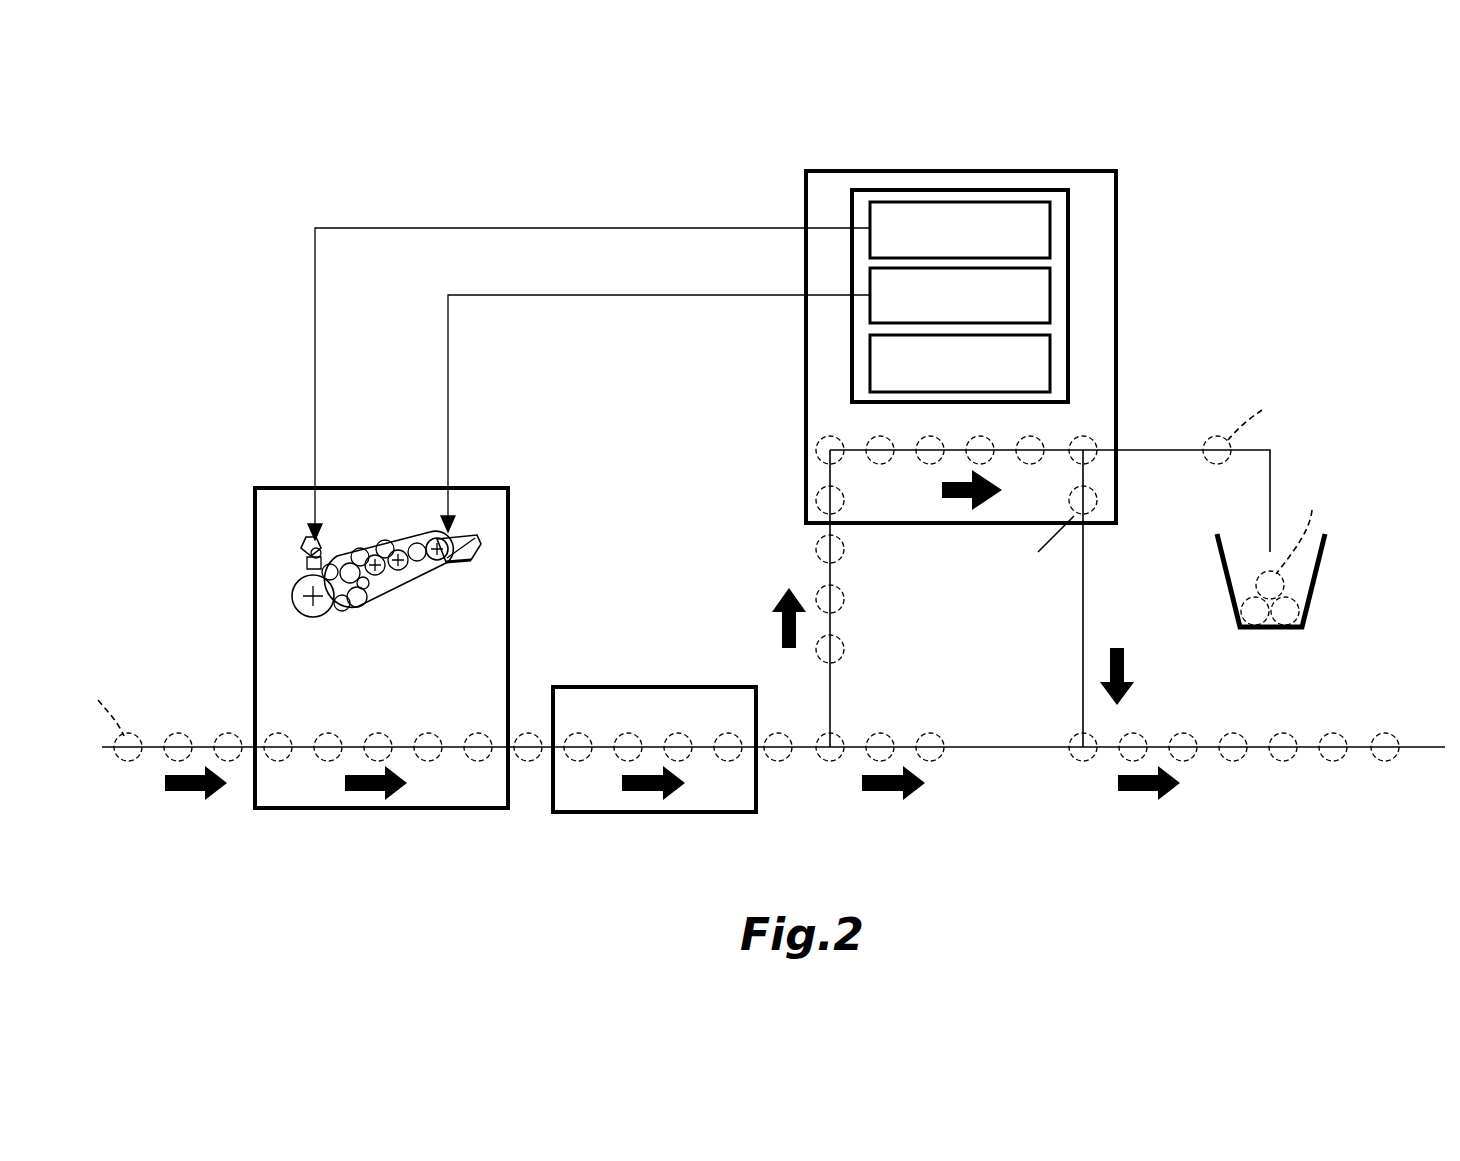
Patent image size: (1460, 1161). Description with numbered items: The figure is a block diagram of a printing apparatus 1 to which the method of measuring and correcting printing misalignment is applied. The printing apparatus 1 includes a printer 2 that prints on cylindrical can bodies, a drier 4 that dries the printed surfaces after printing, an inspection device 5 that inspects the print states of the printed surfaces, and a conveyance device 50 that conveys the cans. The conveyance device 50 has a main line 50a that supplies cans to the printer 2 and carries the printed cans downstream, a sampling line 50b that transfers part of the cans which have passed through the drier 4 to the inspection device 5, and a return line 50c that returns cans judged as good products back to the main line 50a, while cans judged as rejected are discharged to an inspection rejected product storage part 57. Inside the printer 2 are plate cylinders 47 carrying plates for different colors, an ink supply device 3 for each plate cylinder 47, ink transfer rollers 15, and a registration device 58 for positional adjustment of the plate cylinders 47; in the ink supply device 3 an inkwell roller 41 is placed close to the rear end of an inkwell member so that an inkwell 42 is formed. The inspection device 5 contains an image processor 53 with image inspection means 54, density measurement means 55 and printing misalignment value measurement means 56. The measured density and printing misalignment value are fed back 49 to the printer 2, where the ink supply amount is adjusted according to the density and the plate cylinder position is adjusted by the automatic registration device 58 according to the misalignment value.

The printing apparatus 1 is at (1226, 196).
The printer 2 is at (478, 810).
The ink supply device 3 is at (470, 538).
The drier 4 is at (733, 812).
The inspection device 5 is at (1000, 170).
The ink transfer roller 15 is at (422, 566).
The inkwell roller 41 is at (433, 562).
The inkwell 42 is at (445, 540).
The plate cylinder 47 is at (313, 618).
The control signal lines 49 is at (616, 172).
The conveyance device 50 is at (1380, 712).
The main line 50a is at (183, 793).
The sampling line 50b is at (777, 628).
The return line 50c is at (1132, 665).
The image processor 53 is at (1058, 190).
The image inspection means 54 is at (1050, 362).
The density measurement means 55 is at (1050, 295).
The printing misalignment value measurement means 56 is at (1050, 228).
The inspection rejected product storage part 57 is at (1316, 588).
The registration device 58 is at (320, 546).